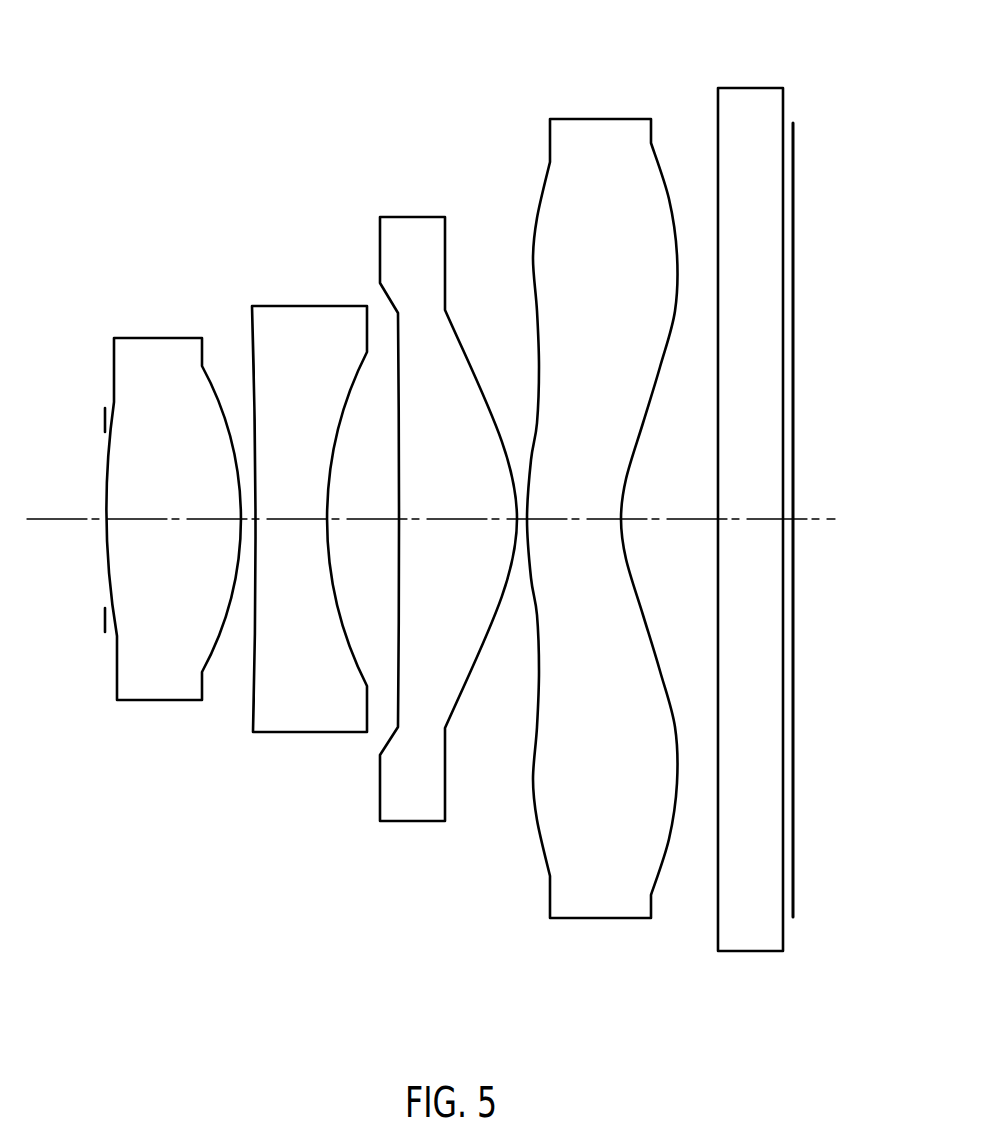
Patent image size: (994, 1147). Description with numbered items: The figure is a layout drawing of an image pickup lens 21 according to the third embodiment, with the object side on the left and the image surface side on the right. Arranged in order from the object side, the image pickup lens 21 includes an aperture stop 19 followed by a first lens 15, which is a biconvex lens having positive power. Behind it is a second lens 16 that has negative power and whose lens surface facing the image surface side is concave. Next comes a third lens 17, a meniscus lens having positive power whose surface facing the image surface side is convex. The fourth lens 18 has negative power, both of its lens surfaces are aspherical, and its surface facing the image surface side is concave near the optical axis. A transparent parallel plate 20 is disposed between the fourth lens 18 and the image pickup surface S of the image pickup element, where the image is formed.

The image pickup lens 21 is at (340, 84).
The first lens 15 is at (157, 338).
The second lens 16 is at (308, 306).
The third lens 17 is at (410, 217).
The fourth lens 18 is at (598, 119).
The aperture stop 19 is at (102, 420).
The transparent parallel plate 20 is at (747, 88).
The image pickup surface S is at (796, 183).